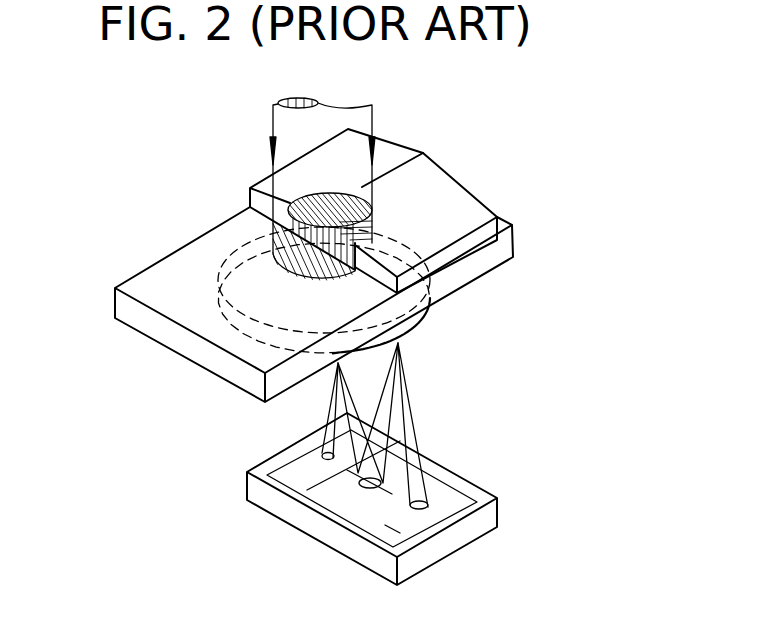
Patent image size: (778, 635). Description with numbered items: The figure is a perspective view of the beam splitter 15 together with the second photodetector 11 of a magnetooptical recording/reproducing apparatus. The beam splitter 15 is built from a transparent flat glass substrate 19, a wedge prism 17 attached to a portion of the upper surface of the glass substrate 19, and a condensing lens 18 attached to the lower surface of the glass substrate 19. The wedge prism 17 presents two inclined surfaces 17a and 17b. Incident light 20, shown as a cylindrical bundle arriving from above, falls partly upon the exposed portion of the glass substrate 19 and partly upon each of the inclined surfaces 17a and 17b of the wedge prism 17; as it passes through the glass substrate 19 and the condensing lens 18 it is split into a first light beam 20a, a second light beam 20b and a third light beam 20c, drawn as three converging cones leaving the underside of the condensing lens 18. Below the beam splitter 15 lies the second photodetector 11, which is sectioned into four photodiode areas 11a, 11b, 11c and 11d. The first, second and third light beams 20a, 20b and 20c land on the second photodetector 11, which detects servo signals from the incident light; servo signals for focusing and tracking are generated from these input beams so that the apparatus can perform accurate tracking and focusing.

The second photodetector 11 is at (371, 514).
The photodiode area 11a is at (293, 472).
The photodiode area 11b is at (345, 498).
The photodiode area 11c is at (393, 492).
The photodiode area 11d is at (392, 528).
The beam splitter 15 is at (345, 254).
The wedge prism 17 is at (404, 200).
The inclined surface 17a is at (348, 168).
The inclined surface 17b is at (457, 207).
The condensing lens 18 is at (425, 322).
The glass substrate 19 is at (143, 333).
The light 20 is at (273, 122).
The first light beam 20a is at (332, 380).
The second light beam 20b is at (390, 413).
The third light beam 20c is at (410, 473).